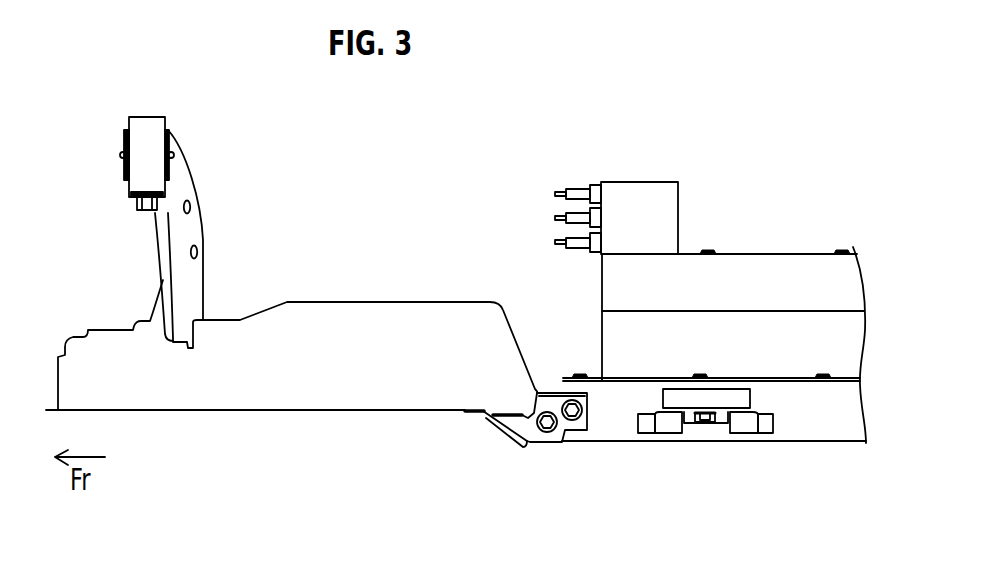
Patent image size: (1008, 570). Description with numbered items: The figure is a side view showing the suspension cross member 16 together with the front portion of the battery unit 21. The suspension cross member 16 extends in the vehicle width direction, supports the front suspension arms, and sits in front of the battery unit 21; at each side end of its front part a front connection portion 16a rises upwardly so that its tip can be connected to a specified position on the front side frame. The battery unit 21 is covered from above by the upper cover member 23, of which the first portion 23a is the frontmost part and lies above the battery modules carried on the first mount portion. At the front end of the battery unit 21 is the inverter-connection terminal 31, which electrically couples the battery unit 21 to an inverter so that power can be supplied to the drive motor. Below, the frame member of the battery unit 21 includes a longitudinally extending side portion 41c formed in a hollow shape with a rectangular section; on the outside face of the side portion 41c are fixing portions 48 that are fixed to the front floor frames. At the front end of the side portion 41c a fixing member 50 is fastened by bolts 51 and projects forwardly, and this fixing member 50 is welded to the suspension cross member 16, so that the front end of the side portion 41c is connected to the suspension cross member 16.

The suspension cross member 16 is at (365, 313).
The front connection portion 16a is at (147, 130).
The battery unit 21 is at (830, 220).
The upper cover member 23 is at (713, 275).
The first portion 23a is at (753, 270).
The inverter-connection terminal 31 is at (580, 190).
The side portion 41c is at (612, 412).
The fixing portion 48 is at (737, 438).
The fixing member 50 is at (500, 425).
The bolt 51 is at (575, 428).